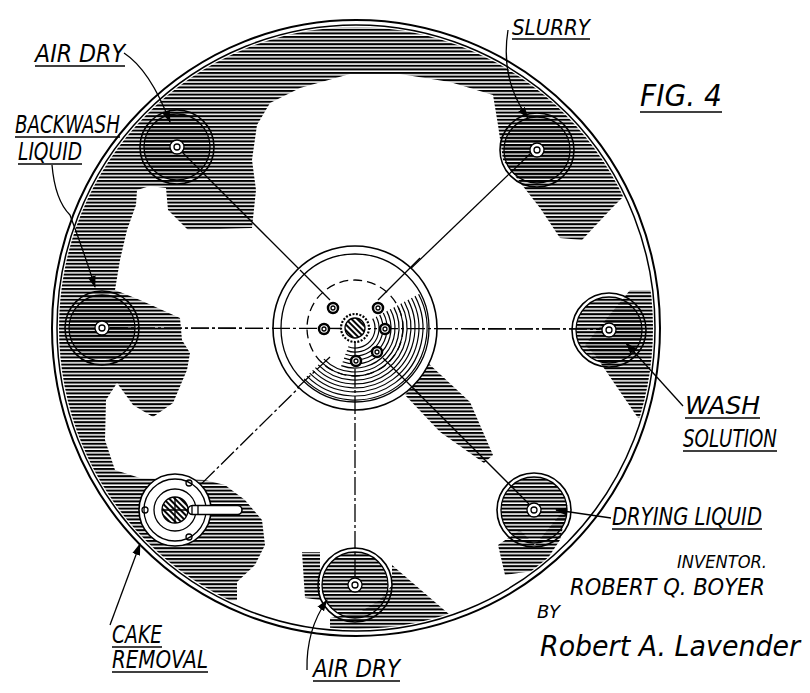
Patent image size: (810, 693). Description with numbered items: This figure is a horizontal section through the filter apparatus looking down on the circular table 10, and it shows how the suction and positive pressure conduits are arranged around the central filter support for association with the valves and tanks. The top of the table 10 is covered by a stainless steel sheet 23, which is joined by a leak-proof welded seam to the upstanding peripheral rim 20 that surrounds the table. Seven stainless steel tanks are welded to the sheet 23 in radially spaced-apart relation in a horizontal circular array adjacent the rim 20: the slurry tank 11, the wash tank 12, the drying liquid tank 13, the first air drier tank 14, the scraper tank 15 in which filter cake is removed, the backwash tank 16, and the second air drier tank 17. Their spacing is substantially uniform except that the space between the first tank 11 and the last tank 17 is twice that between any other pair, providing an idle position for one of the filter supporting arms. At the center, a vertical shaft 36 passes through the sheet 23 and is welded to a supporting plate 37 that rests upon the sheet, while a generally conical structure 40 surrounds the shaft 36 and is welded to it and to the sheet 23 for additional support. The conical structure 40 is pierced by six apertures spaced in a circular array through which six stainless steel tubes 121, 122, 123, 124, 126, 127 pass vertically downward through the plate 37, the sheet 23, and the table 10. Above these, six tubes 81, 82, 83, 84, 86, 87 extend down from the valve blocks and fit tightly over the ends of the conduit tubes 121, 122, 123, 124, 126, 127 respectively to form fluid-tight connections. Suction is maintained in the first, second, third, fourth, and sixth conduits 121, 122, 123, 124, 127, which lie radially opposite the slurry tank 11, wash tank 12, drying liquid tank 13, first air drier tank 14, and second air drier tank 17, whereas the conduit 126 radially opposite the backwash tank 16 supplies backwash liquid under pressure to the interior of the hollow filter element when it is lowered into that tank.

The circular table 10 is at (650, 226).
The slurry tank 11 is at (534, 152).
The wash tank 12 is at (585, 357).
The drying liquid tank 13 is at (500, 521).
The first air drier tank 14 is at (344, 551).
The scraper tank 15 is at (190, 457).
The backwash tank 16 is at (129, 301).
The second air drier tank 17 is at (168, 184).
The peripheral rim 20 is at (244, 42).
The stainless steel sheet 23 is at (384, 198).
The vertical shaft 36 is at (362, 313).
The supporting plate 37 is at (339, 261).
The conical structure 40 is at (371, 262).
The tube 81 is at (384, 306).
The tube 82 is at (389, 331).
The tube 83 is at (378, 357).
The tube 84 is at (355, 366).
The tube 86 is at (322, 331).
The tube 87 is at (330, 306).
The first pressure differential conduit 121 is at (386, 311).
The second pressure differential conduit 122 is at (389, 334).
The third pressure differential conduit 123 is at (376, 357).
The fourth pressure differential conduit 124 is at (357, 366).
The pressure differential conduit 126 is at (321, 334).
The sixth pressure differential conduit 127 is at (329, 311).